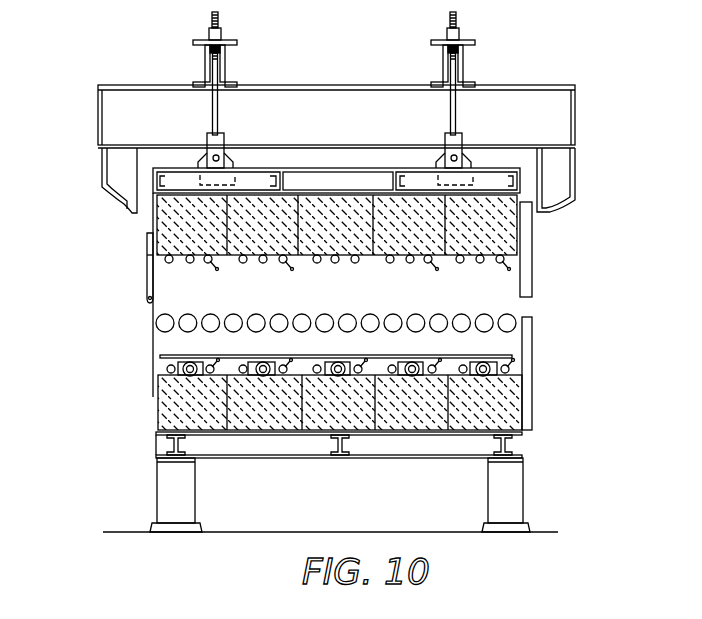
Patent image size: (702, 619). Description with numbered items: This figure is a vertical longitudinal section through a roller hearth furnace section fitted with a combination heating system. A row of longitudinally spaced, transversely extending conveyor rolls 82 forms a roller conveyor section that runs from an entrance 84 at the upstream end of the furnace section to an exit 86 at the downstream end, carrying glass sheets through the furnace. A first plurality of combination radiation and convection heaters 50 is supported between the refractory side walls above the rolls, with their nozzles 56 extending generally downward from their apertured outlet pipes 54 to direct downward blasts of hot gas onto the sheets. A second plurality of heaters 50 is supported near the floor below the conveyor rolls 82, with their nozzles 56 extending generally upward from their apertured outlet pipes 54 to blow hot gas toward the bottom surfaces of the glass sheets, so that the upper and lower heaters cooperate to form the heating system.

The combination radiation and convection heater 50 is at (428, 267).
The apertured outlet pipe 54 is at (515, 258).
The nozzle 56 is at (501, 264).
The conveyor roll 82 is at (211, 314).
The entrance 84 is at (152, 308).
The exit 86 is at (530, 305).